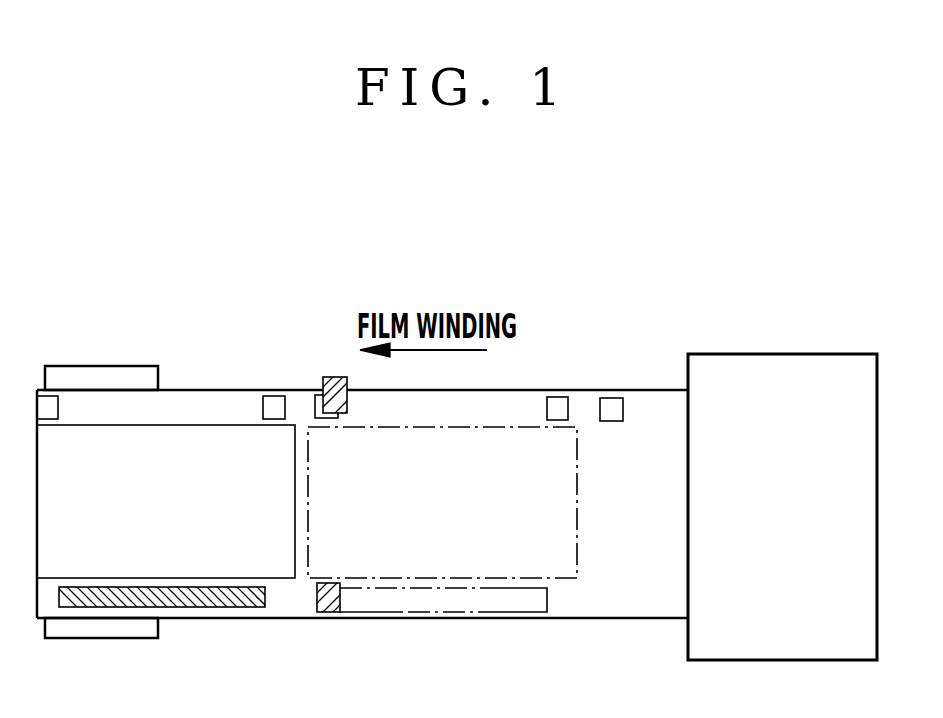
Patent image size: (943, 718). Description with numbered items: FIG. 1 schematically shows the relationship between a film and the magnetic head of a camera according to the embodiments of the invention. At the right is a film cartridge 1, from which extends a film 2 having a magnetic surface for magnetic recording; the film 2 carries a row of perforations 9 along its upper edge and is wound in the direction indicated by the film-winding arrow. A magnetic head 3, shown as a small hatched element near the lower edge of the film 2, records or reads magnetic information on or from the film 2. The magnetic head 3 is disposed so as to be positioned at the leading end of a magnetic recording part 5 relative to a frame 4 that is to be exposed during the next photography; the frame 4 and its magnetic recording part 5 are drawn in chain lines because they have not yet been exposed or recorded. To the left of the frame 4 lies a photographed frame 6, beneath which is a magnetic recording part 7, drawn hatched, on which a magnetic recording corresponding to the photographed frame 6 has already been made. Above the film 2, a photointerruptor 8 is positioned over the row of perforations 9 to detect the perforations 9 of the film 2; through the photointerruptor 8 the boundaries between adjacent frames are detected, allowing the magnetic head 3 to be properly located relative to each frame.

The film cartridge 1 is at (788, 367).
The film 2 is at (527, 403).
The magnetic head 3 is at (333, 610).
The frame to be exposed 4 is at (562, 572).
The magnetic recording part 5 is at (500, 603).
The photographed frame 6 is at (277, 568).
The magnetic recording part 7 is at (192, 610).
The photointerruptor 8 is at (330, 377).
The perforations 9 is at (320, 410).